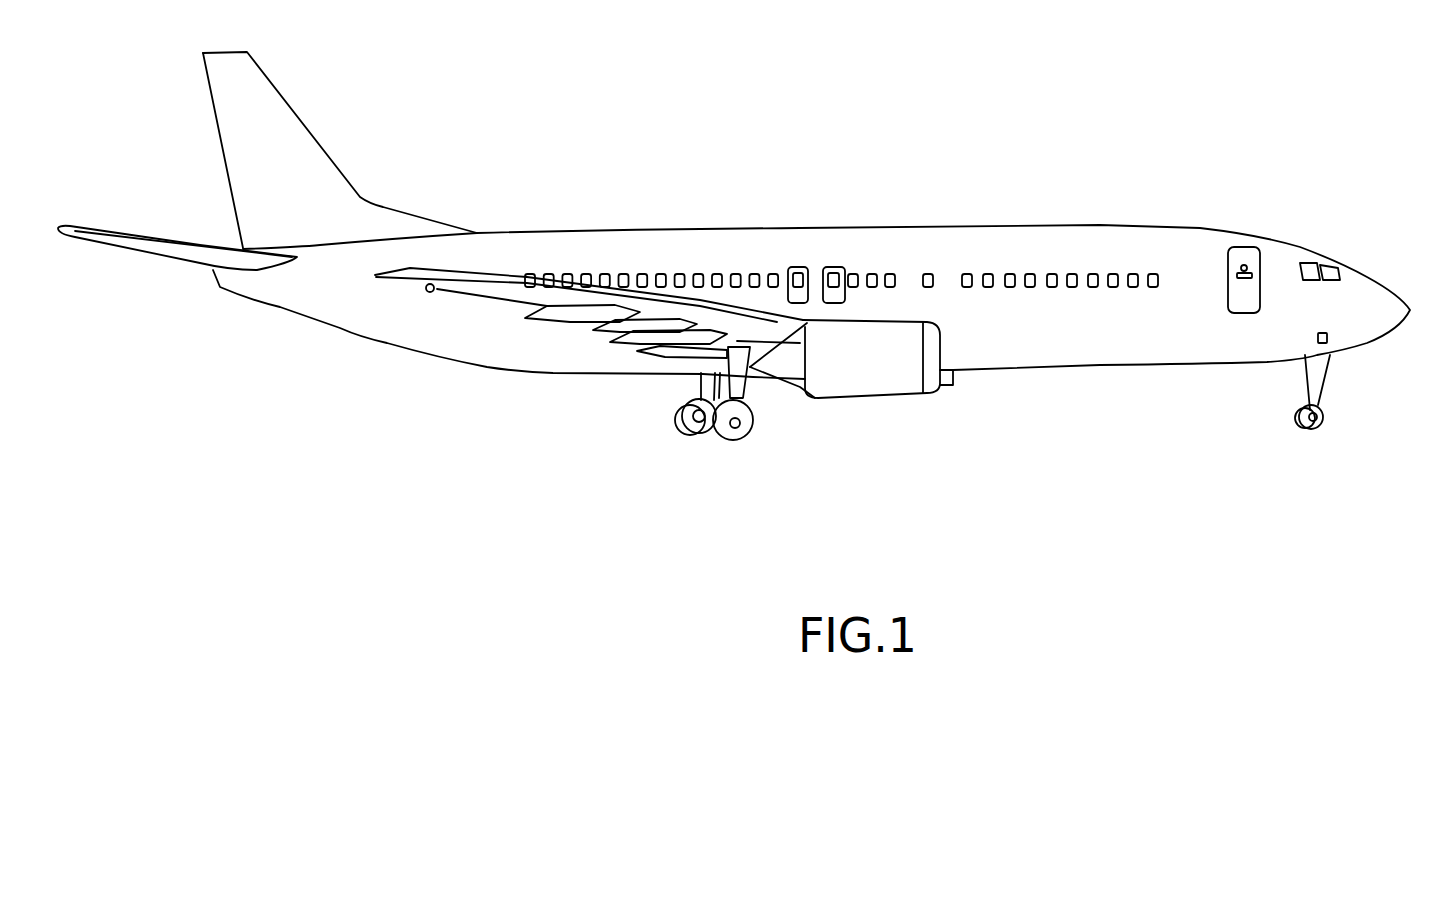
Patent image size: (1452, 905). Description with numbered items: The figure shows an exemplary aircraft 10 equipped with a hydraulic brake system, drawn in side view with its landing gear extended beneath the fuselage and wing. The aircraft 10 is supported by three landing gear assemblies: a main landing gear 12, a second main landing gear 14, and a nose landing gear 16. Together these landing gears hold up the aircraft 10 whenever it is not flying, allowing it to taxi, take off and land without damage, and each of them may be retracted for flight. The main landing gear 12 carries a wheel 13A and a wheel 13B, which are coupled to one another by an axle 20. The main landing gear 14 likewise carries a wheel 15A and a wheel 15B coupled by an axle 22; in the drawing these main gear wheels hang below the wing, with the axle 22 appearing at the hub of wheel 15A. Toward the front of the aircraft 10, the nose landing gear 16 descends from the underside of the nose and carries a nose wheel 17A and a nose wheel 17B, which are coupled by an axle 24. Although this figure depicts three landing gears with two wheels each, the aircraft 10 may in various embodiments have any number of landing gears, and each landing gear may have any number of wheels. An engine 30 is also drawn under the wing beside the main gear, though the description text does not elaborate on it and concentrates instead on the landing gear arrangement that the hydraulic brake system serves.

The aircraft 10 is at (744, 301).
The main landing gear 12 is at (695, 447).
The wheel 13A is at (687, 398).
The wheel 13B is at (694, 432).
The main landing gear 14 is at (793, 452).
The wheel 15A is at (753, 416).
The wheel 15B is at (712, 440).
The nose landing gear 16 is at (1321, 424).
The nose wheel 17A is at (1297, 422).
The nose wheel 17B is at (1320, 418).
The axle 20 is at (688, 428).
The axle 22 is at (736, 428).
The axle 24 is at (1313, 432).
The engine 30 is at (788, 338).